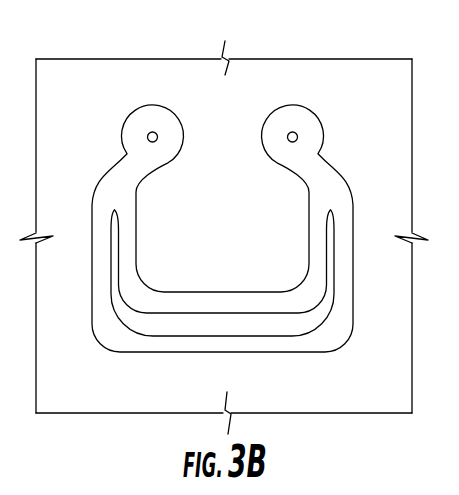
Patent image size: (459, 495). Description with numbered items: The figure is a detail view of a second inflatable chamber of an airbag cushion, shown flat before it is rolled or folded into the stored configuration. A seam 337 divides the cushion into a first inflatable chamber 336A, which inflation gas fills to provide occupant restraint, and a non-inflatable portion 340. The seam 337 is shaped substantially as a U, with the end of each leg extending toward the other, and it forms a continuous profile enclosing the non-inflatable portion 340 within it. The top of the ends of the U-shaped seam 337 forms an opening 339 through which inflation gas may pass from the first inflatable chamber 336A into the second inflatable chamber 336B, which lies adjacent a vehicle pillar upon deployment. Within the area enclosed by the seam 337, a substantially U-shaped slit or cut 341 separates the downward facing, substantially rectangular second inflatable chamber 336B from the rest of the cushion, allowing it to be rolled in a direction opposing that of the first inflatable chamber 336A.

The first inflatable chamber 336A is at (87, 283).
The second inflatable chamber 336B is at (242, 224).
The seam 337 is at (92, 188).
The opening 339 is at (222, 150).
The non-inflatable portion 340 is at (154, 129).
The slit or cut 341 is at (278, 316).